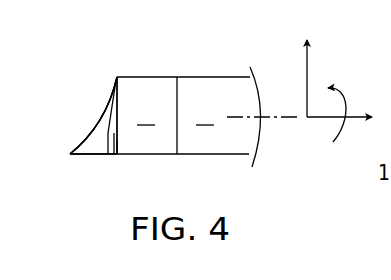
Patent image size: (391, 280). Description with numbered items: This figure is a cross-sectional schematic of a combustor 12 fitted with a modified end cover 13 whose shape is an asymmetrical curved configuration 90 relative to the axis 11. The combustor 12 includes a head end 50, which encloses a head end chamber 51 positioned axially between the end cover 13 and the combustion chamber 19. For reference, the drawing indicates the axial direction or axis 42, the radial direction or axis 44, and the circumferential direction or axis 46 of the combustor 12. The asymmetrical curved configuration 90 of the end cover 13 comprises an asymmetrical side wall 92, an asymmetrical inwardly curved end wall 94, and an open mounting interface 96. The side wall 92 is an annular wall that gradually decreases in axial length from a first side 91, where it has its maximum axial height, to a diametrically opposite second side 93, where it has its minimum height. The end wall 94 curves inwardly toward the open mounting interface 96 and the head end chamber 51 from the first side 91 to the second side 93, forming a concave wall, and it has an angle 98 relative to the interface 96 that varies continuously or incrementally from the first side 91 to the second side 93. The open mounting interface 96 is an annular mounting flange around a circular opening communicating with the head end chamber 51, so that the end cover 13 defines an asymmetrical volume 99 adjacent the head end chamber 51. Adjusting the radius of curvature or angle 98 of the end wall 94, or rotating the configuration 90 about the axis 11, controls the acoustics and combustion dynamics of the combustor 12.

The axis 11 is at (262, 116).
The combustor 12 is at (228, 42).
The end cover 13 is at (95, 86).
The combustion chamber 19 is at (205, 114).
The axial direction or axis 42 is at (327, 119).
The radial direction or axis 44 is at (306, 80).
The circumferential direction or axis 46 is at (347, 96).
The head end 50 is at (152, 61).
The head end chamber 51 is at (146, 114).
The asymmetrical curved configuration 90 is at (72, 132).
The first side 91 is at (119, 155).
The asymmetrical side wall 92 is at (111, 157).
The second side 93 is at (117, 77).
The asymmetrical inwardly curved end wall 94 is at (114, 134).
The open mounting interface 96 is at (120, 113).
The angle 98 is at (103, 150).
The asymmetrical chamber or volume 99 is at (95, 143).